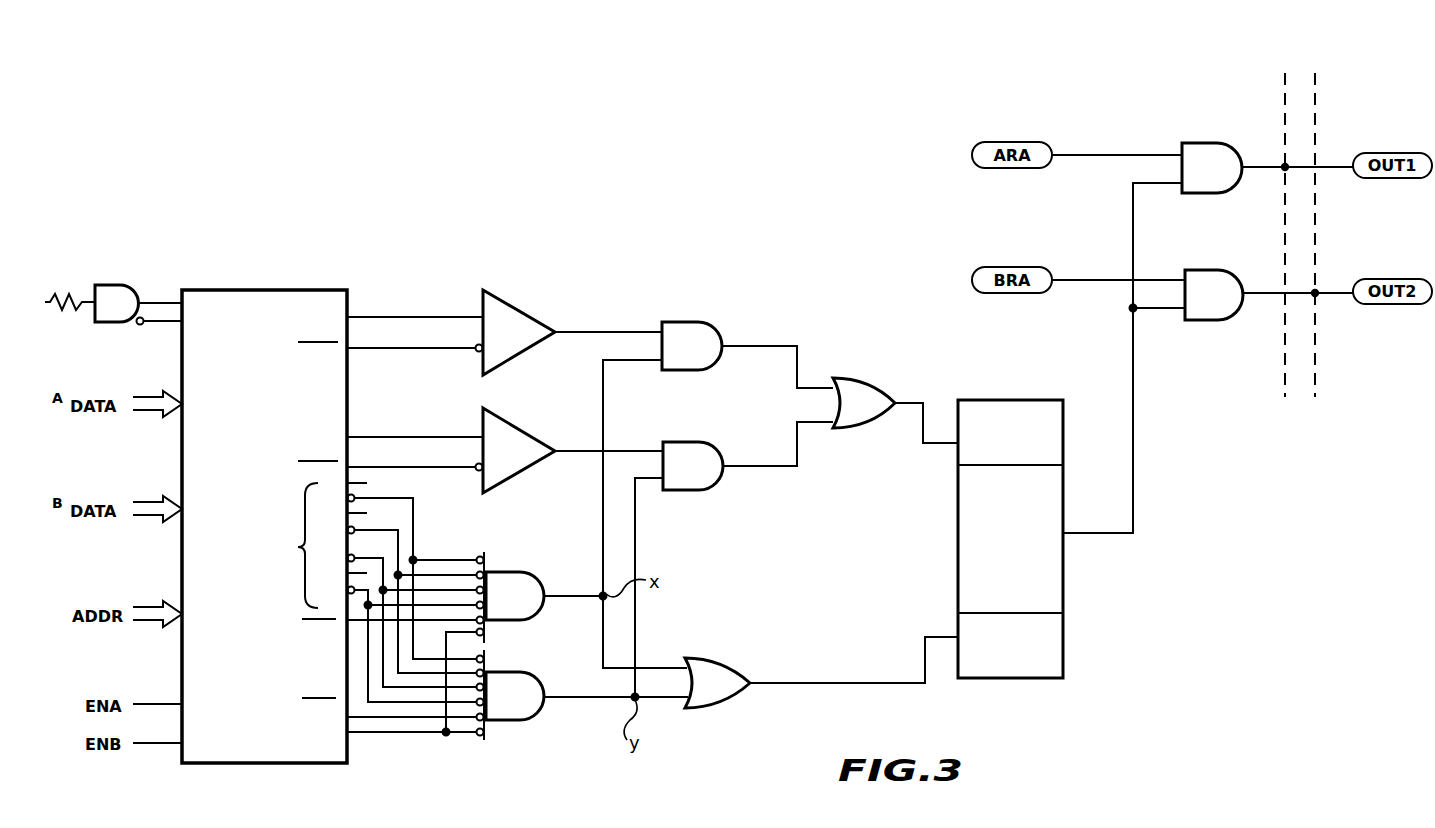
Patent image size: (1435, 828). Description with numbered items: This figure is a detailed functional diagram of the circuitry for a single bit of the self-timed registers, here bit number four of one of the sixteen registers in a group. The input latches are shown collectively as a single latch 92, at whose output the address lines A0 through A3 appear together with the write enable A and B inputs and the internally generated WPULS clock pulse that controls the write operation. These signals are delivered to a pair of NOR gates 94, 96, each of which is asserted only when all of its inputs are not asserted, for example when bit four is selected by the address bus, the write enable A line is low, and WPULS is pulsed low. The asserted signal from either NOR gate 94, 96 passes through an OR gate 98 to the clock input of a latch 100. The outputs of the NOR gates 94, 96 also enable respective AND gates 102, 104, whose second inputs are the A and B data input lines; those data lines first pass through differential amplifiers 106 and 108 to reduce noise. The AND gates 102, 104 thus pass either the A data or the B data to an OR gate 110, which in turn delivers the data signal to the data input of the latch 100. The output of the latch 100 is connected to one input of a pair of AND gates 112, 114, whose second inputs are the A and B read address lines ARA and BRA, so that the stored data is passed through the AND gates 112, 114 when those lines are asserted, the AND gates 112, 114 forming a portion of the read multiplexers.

The latch 92 is at (256, 290).
The NOR gate 94 is at (527, 568).
The NOR gate 96 is at (527, 678).
The OR gate 98 is at (718, 655).
The latch 100 is at (1003, 400).
The AND gate 102 is at (690, 322).
The AND gate 104 is at (693, 440).
The differential amplifier 106 is at (522, 312).
The differential amplifier 108 is at (522, 430).
The OR gate 110 is at (862, 378).
The AND gate 112 is at (1205, 143).
The AND gate 114 is at (1205, 272).